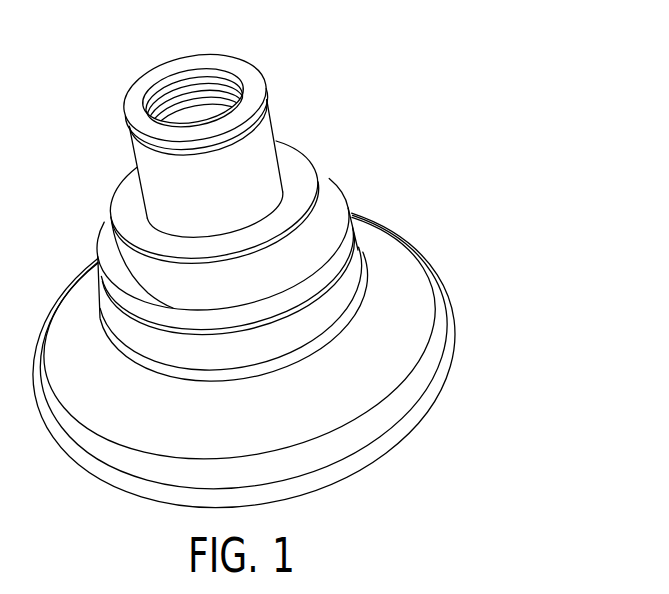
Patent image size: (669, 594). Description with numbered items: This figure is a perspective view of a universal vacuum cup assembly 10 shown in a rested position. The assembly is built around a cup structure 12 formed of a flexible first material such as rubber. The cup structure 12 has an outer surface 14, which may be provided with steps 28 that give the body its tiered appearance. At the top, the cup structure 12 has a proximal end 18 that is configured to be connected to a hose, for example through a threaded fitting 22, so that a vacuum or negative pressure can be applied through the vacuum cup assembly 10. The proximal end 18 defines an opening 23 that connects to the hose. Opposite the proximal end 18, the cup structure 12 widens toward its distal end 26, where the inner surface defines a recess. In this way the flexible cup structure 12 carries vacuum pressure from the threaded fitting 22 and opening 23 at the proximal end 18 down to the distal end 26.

The vacuum cup assembly 10 is at (582, 238).
The cup structure 12 is at (444, 200).
The outer surface 14 is at (456, 257).
The proximal end 18 is at (333, 60).
The threaded fitting 22 is at (257, 102).
The opening 23 is at (187, 107).
The distal end 26 is at (474, 488).
The steps 28 is at (376, 158).